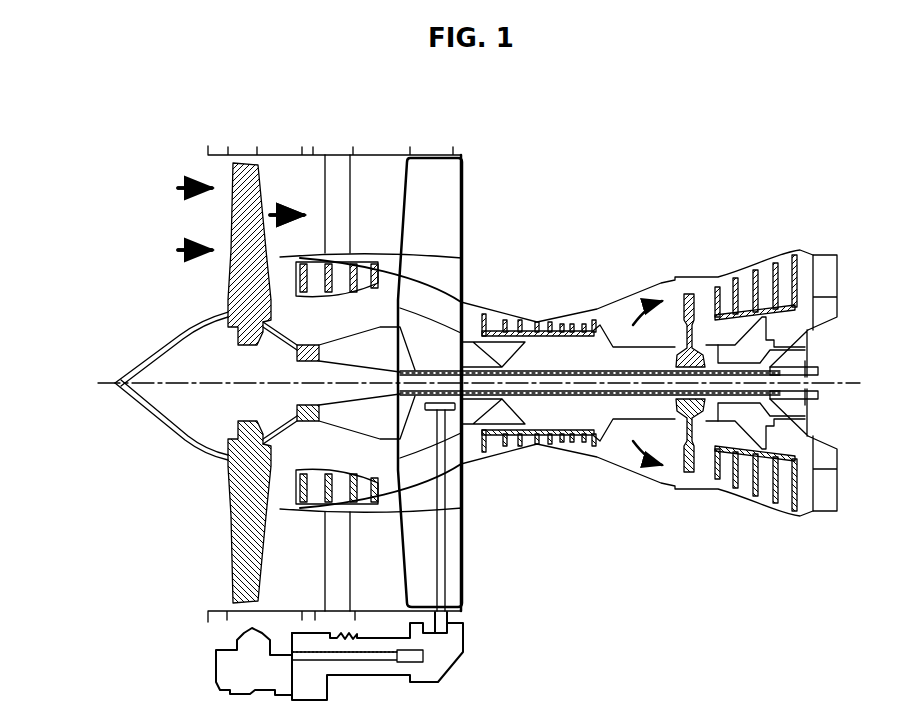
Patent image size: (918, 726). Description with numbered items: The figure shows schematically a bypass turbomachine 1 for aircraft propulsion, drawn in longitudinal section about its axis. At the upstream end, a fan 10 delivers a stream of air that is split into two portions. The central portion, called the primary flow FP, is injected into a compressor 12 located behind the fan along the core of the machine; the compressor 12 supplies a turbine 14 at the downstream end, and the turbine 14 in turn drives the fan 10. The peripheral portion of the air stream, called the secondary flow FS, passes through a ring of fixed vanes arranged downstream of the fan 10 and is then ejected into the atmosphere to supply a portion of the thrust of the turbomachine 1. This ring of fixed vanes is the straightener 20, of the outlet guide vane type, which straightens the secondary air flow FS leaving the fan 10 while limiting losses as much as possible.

The bypass turbomachine 1 is at (110, 290).
The fan 10 is at (248, 522).
The compressor 12 is at (296, 328).
The turbine 14 is at (838, 523).
The straightener 20 is at (360, 207).
The secondary flow FS is at (241, 219).
The primary flow FP is at (283, 273).